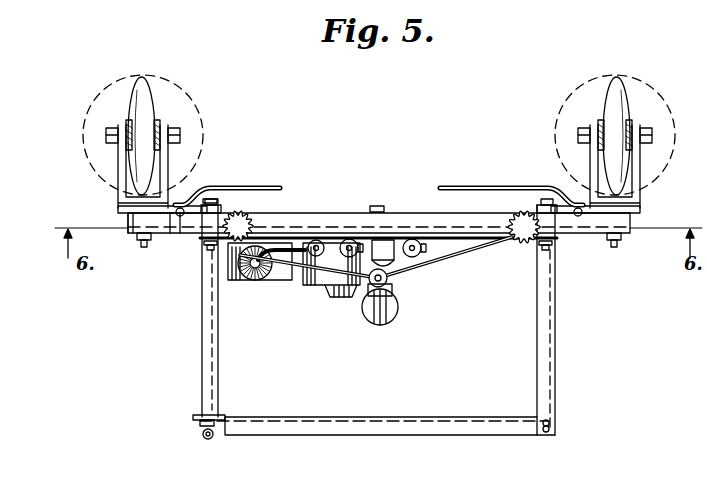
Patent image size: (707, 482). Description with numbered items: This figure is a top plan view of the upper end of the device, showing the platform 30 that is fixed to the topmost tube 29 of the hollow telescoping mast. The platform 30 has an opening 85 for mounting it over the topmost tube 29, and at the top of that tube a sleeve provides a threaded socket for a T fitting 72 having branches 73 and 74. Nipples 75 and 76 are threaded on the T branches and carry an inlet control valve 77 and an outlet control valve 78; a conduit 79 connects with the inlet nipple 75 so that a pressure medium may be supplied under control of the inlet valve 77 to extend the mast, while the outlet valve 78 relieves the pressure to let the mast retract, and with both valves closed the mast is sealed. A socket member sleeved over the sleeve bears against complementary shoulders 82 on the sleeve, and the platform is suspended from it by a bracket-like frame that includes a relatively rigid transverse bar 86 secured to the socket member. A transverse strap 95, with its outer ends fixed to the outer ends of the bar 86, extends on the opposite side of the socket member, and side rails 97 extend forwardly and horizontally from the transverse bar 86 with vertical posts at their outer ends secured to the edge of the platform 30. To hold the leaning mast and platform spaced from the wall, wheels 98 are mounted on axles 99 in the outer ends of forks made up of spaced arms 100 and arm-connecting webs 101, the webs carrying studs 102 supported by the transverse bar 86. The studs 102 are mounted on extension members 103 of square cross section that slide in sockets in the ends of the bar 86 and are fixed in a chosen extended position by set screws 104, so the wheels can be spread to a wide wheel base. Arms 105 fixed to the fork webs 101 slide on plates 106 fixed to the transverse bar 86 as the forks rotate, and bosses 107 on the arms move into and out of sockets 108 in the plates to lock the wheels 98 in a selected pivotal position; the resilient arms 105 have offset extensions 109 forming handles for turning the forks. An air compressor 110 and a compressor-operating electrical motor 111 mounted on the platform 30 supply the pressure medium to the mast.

The topmost tube 29 is at (389, 276).
The platform 30 is at (532, 323).
The T fitting 72 is at (382, 240).
The T branch 73 is at (362, 238).
The T branch 74 is at (420, 240).
The inlet nipple 75 is at (332, 238).
The outlet nipple 76 is at (445, 237).
The inlet control valve 77 is at (307, 286).
The outlet control valve 78 is at (421, 266).
The conduit 79 is at (290, 282).
The shoulders 82 is at (400, 290).
The opening 85 is at (398, 309).
The transverse bar 86 is at (385, 209).
The transverse strap 95 is at (459, 255).
The side rails 97 is at (214, 357).
The wheels 98 is at (142, 116).
The axles 99 is at (178, 136).
The spaced arms 100 is at (166, 177).
The arm-connecting webs 101 is at (128, 210).
The studs 102 is at (141, 247).
The extension members 103 is at (140, 233).
The set screws 104 is at (262, 217).
The arms 105 is at (273, 186).
The plates 106 is at (184, 245).
The bosses 107 is at (208, 197).
The sockets 108 is at (170, 215).
The offset extensions 109 is at (275, 184).
The air compressor 110 is at (240, 284).
The electrical motor 111 is at (330, 298).